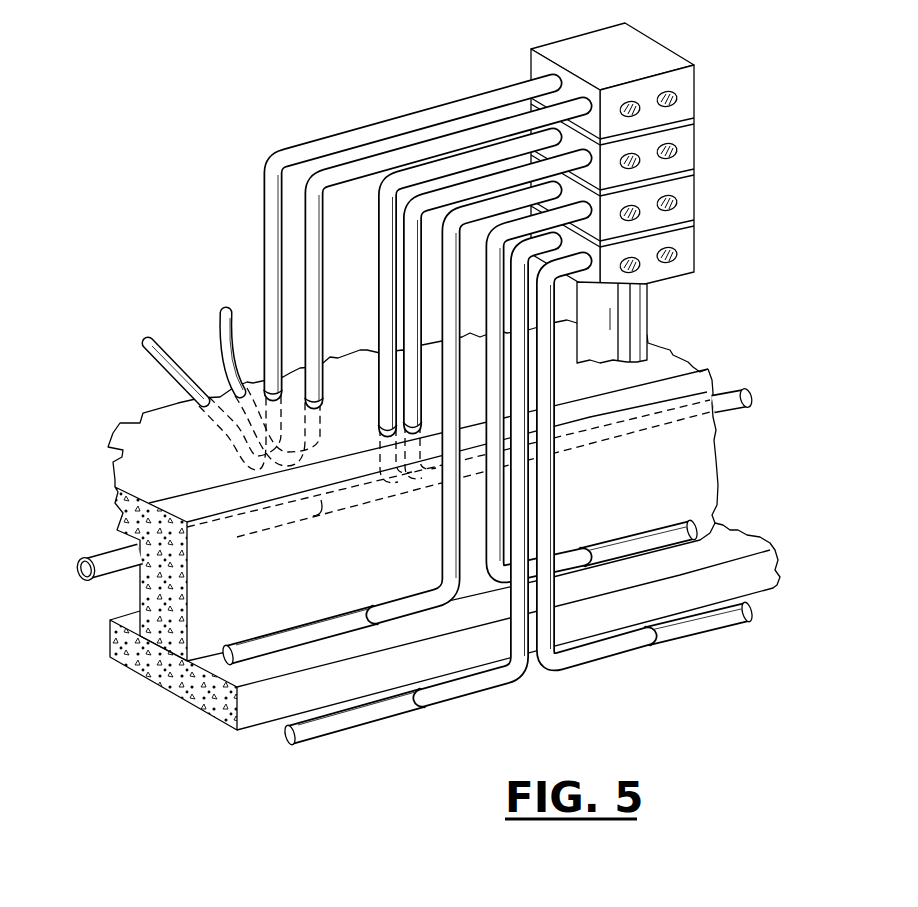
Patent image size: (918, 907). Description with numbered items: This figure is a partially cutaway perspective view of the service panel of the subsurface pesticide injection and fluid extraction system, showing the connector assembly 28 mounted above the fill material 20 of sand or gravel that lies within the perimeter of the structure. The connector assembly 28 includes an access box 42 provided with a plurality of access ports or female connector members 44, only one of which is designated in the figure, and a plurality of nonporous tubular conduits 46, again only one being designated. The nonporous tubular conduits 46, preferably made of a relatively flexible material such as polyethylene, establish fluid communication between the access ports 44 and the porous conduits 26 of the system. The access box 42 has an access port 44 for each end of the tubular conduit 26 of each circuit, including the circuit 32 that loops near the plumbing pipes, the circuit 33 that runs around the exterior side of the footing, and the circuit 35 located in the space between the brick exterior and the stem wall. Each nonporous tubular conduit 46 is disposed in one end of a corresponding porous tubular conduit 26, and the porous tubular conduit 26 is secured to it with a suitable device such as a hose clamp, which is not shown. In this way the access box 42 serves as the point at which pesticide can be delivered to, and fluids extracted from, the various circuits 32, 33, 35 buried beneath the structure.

The fill material 20 is at (127, 435).
The porous tubular conduit 26 is at (104, 552).
The connector assembly 28 is at (674, 193).
The circuit 32 is at (215, 358).
The circuit 33 is at (483, 691).
The circuit 35 is at (368, 615).
The access box 42 is at (697, 208).
The access port 44 is at (669, 263).
The nonporous tubular conduit 46 is at (311, 138).